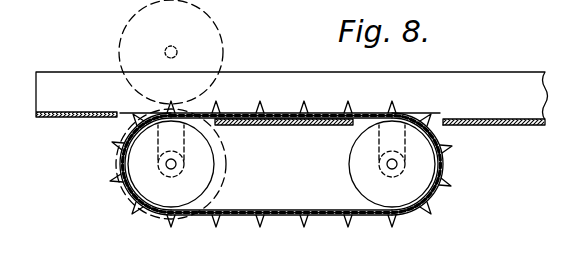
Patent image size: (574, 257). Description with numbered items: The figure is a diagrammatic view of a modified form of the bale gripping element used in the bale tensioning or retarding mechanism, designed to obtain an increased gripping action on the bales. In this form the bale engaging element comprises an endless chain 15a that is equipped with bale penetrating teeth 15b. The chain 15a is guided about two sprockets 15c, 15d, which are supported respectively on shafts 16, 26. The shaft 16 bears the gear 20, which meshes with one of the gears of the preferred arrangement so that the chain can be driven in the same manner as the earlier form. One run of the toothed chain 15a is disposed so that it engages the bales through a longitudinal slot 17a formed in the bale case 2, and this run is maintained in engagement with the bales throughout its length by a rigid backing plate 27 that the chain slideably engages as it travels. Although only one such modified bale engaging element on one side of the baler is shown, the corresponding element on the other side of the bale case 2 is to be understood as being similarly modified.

The bale case 2 is at (54, 122).
The longitudinal slot 17a is at (443, 118).
The endless chain 15a is at (281, 198).
The bale penetrating teeth 15b is at (298, 110).
The sprocket 15c is at (205, 170).
The sprocket 15d is at (354, 167).
The shaft 16 is at (168, 164).
The gear 20 is at (221, 151).
The shaft 26 is at (395, 168).
The rigid backing plate 27 is at (287, 115).